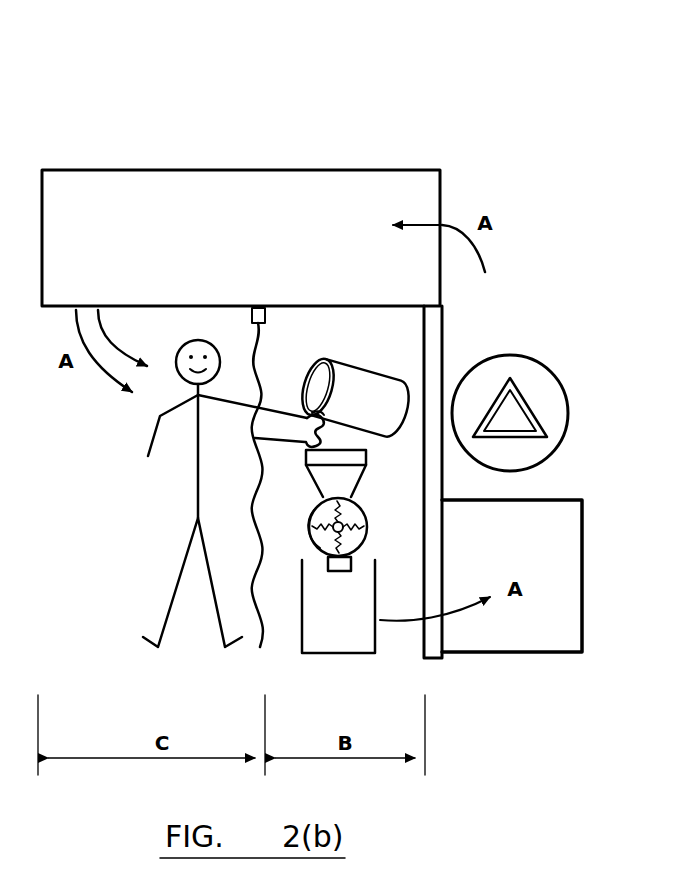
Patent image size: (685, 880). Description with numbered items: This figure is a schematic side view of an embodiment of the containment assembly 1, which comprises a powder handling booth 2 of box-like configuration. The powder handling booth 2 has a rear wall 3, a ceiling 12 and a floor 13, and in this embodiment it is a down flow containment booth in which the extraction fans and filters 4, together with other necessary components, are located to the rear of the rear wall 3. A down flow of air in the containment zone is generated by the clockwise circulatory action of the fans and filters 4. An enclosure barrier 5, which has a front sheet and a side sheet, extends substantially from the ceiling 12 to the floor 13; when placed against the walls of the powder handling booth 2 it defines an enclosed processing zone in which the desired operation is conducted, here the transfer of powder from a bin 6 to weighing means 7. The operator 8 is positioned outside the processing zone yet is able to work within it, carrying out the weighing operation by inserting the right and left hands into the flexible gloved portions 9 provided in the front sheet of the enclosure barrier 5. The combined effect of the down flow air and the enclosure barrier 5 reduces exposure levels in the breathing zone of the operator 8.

The containment assembly 1 is at (424, 146).
The powder handling booth 2 is at (262, 166).
The rear wall 3 is at (437, 344).
The extraction fans and filters 4 is at (560, 568).
The enclosure barrier 5 is at (263, 363).
The bin 6 is at (360, 393).
The weighing means 7 is at (330, 488).
The operator 8 is at (198, 473).
The flexible gloved portions 9 is at (282, 430).
The ceiling 12 is at (145, 198).
The floor 13 is at (277, 632).